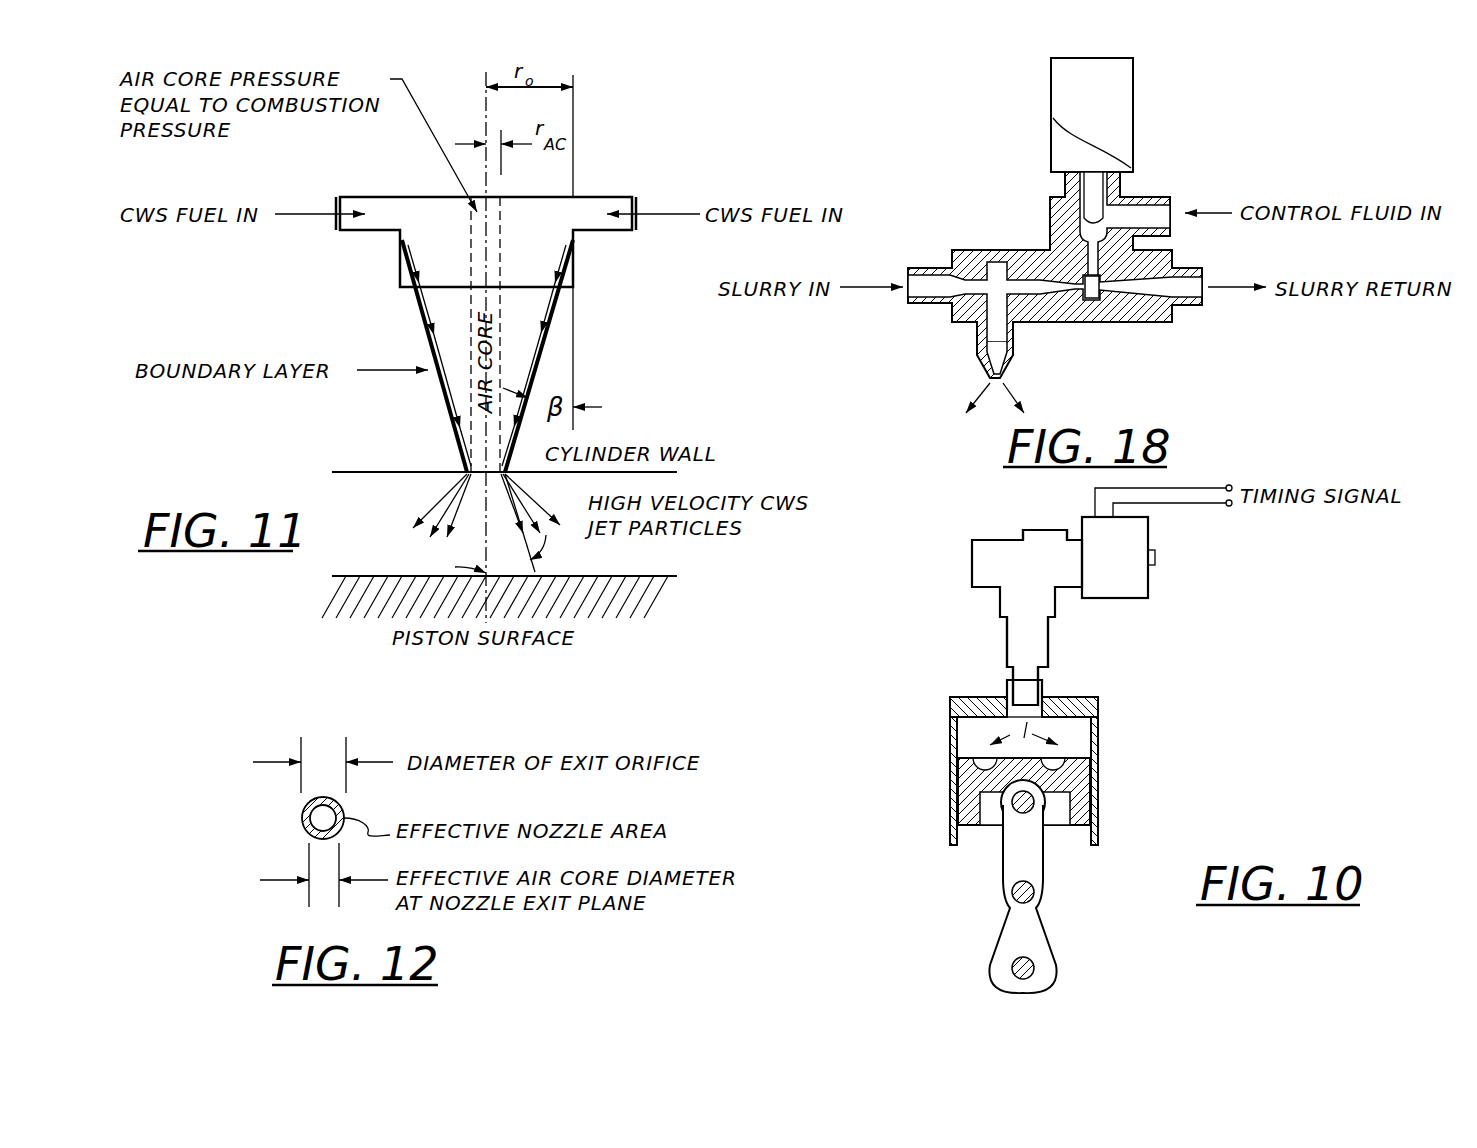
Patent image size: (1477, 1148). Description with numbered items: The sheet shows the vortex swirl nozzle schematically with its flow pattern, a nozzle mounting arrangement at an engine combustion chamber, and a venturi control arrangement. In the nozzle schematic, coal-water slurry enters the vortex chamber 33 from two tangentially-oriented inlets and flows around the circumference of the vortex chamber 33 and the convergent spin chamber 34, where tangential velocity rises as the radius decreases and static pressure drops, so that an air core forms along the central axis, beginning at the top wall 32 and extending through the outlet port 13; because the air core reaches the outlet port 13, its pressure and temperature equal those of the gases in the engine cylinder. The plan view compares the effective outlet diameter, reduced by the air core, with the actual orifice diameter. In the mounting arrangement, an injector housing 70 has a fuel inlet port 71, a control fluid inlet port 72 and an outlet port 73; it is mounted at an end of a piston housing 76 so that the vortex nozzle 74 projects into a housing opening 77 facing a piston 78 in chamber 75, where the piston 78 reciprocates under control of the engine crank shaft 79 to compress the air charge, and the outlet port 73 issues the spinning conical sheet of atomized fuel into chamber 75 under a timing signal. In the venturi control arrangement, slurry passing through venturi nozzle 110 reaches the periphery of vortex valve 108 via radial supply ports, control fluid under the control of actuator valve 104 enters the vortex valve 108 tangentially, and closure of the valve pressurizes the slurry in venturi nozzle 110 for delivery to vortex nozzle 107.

In FIG. 11, the outlet port 13 is at (477, 485).
In FIG. 11, the top wall 32 is at (412, 197).
In FIG. 11, the vortex chamber 33 is at (548, 233).
In FIG. 11, the spin chamber 34 is at (550, 348).
In FIG. 10, the injector housing 70 is at (1030, 630).
In FIG. 10, the fuel inlet port 71 is at (972, 563).
In FIG. 10, the control fluid inlet port 72 is at (1045, 528).
In FIG. 10, the outlet port 73 is at (1024, 739).
In FIG. 10, the vortex nozzle 74 is at (988, 697).
In FIG. 10, the chamber 75 is at (978, 738).
In FIG. 10, the piston housing 76 is at (1100, 705).
In FIG. 10, the housing opening 77 is at (1060, 693).
In FIG. 10, the piston 78 is at (1100, 773).
In FIG. 10, the engine crank shaft 79 is at (1048, 950).
In FIG. 18, the actuator valve 104 is at (1137, 134).
In FIG. 18, the vortex nozzle 107 is at (985, 366).
In FIG. 18, the vortex valve 108 is at (1088, 300).
In FIG. 18, the venturi nozzle 110 is at (975, 278).